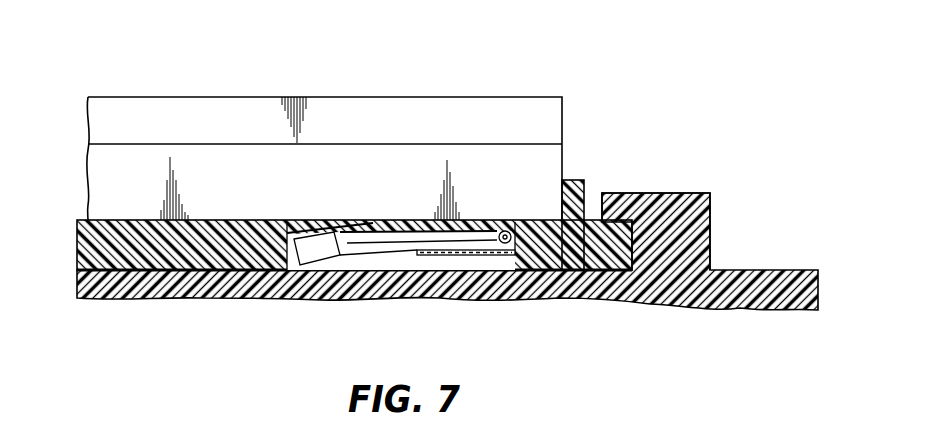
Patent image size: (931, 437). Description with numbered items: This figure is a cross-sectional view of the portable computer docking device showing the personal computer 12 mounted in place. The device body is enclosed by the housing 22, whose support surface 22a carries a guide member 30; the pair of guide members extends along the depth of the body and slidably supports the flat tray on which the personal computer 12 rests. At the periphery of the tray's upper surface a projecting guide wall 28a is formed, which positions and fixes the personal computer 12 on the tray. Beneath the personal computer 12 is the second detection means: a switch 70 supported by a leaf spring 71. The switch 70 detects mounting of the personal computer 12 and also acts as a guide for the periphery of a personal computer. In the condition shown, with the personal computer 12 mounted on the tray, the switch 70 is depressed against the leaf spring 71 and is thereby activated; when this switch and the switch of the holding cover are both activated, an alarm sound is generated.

The personal computer 12 is at (438, 97).
The housing 22 is at (740, 270).
The support surface 22a is at (112, 220).
The guide wall 28a is at (577, 180).
The guide member 30 is at (648, 193).
The switch 70 is at (352, 250).
The leaf spring 71 is at (463, 255).